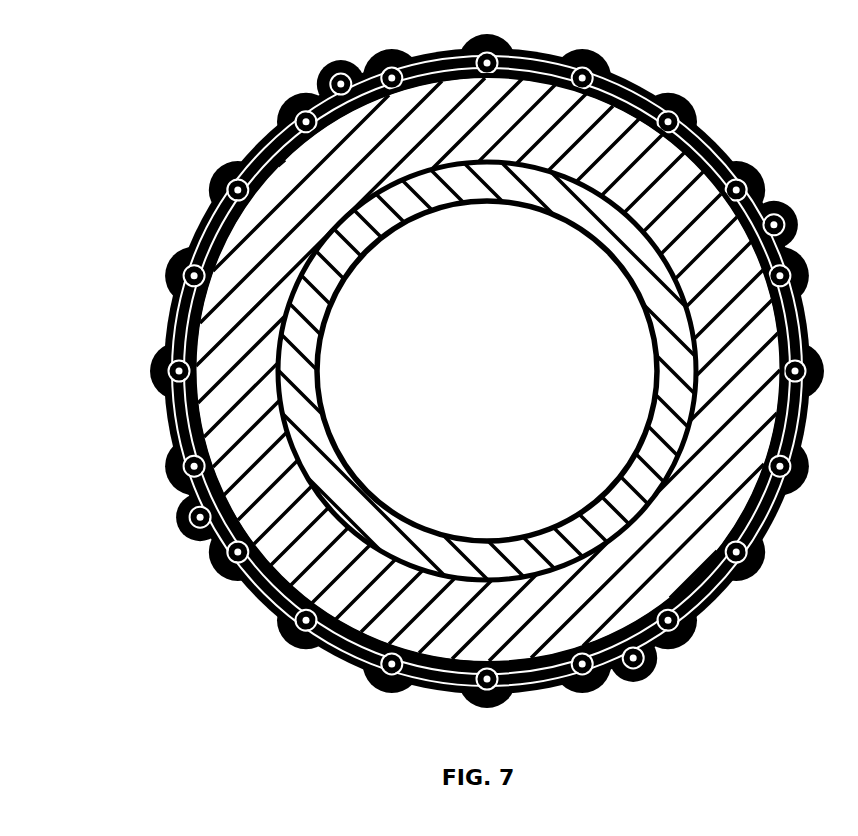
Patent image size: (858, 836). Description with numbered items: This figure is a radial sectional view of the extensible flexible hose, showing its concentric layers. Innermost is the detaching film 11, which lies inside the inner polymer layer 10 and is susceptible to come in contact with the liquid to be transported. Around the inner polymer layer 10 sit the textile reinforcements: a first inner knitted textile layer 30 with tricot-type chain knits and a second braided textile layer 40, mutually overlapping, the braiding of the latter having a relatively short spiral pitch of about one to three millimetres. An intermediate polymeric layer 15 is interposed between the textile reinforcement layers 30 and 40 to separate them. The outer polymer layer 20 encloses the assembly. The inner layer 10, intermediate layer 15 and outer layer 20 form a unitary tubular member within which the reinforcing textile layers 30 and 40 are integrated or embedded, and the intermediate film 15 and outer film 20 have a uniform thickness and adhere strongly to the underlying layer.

The inner polymer layer 10 is at (670, 497).
The detaching film 11 is at (412, 553).
The intermediate polymeric layer 15 is at (168, 432).
The outer polymer layer 20 is at (247, 593).
The first inner knitted textile layer 30 is at (168, 270).
The second braided textile layer 40 is at (322, 88).